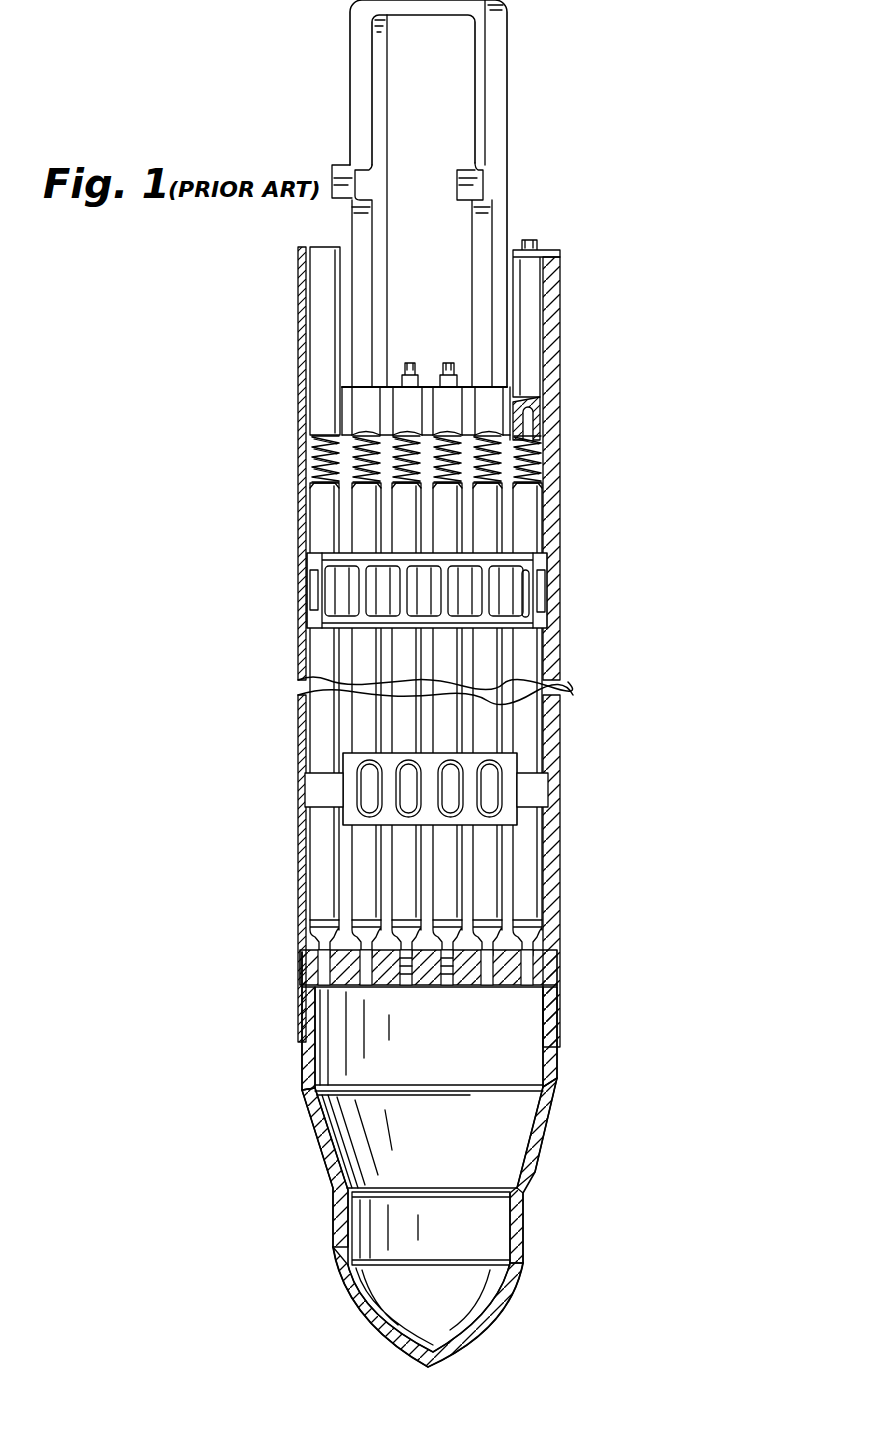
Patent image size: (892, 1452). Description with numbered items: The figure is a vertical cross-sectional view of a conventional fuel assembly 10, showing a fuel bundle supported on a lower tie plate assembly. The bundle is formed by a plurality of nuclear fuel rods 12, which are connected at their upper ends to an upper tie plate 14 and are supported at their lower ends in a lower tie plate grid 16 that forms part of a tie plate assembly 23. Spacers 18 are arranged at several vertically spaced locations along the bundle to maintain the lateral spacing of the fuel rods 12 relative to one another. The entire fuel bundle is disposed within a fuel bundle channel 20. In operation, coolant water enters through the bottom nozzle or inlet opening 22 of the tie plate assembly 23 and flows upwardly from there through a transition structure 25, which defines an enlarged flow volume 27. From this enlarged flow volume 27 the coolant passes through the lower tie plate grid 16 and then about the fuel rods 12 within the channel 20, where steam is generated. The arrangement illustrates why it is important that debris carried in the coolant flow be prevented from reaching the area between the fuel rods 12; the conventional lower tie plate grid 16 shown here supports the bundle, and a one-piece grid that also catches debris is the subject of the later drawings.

The fuel assembly 10 is at (656, 518).
The nuclear fuel rods 12 is at (527, 520).
The upper tie plate 14 is at (318, 417).
The lower tie plate grid 16 is at (557, 965).
The spacers 18 is at (533, 598).
The fuel bundle channel 20 is at (297, 880).
The bottom nozzle or inlet opening 22 is at (437, 1245).
The tie plate assembly 23 is at (561, 1162).
The transition structure 25 is at (312, 1108).
The enlarged flow volume 27 is at (446, 1067).